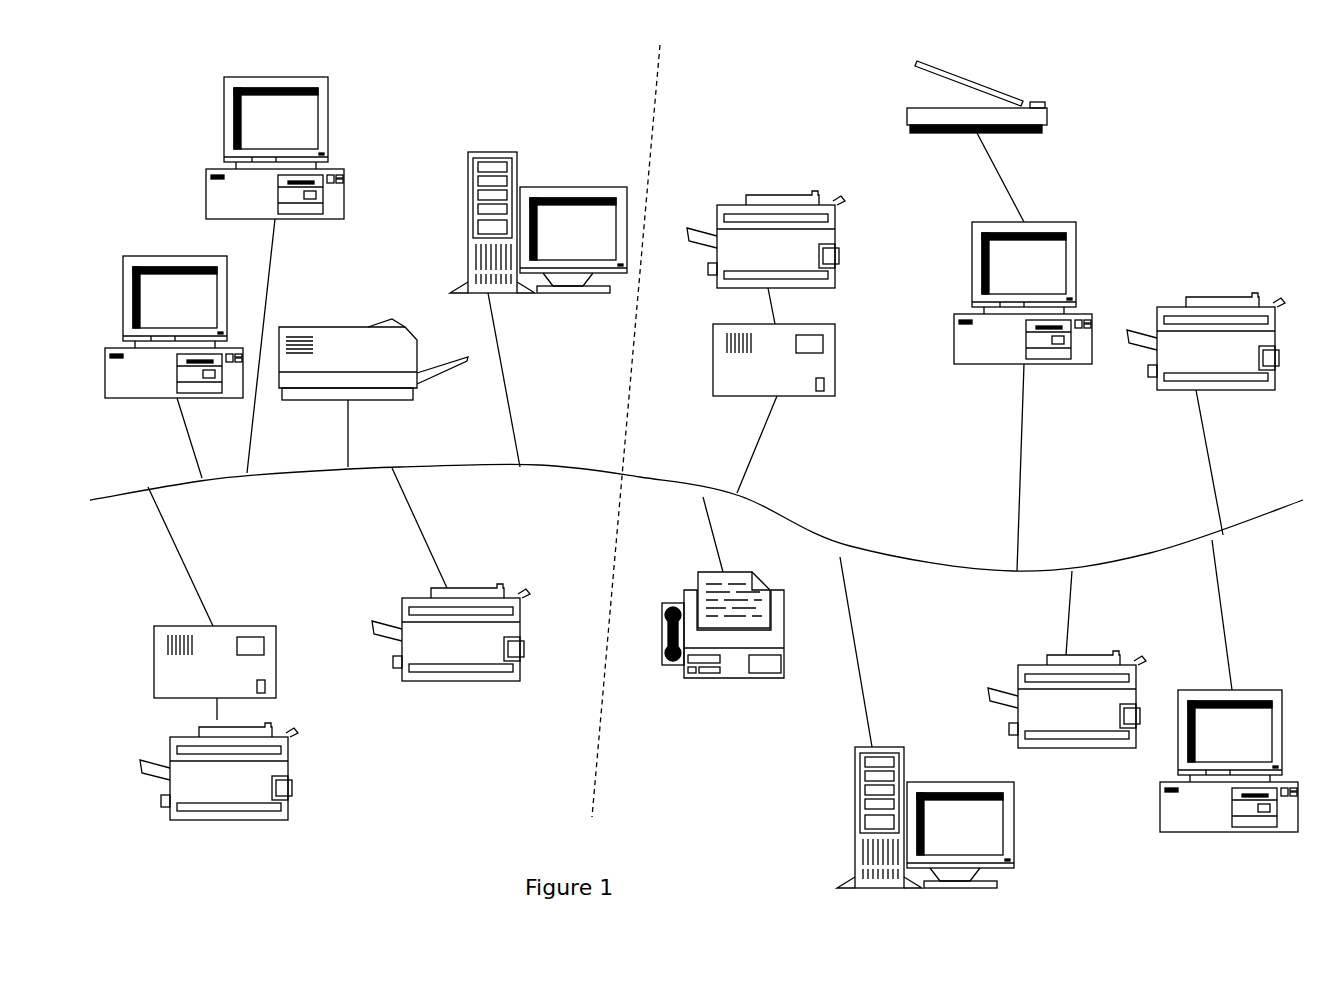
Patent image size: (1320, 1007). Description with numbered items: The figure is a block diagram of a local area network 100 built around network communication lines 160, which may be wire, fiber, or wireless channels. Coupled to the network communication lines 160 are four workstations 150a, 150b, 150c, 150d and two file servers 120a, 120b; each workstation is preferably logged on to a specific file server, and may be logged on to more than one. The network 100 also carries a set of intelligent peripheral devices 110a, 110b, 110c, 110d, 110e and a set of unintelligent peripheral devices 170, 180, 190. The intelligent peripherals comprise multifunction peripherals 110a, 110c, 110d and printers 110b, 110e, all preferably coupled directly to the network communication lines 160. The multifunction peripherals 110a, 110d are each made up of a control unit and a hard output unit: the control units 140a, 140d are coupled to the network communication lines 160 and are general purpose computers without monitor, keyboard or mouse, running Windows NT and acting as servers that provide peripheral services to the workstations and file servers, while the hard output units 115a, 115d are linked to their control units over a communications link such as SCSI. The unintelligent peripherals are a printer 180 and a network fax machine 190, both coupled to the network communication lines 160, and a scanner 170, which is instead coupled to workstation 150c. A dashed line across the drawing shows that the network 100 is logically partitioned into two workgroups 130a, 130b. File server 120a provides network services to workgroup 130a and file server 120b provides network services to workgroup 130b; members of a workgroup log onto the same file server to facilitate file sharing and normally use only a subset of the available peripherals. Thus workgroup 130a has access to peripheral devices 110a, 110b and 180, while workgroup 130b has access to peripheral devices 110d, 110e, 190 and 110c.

The local area network 100 is at (690, 24).
The multifunction peripheral 110a is at (294, 680).
The printer 110b is at (483, 682).
The multifunction peripheral 110c is at (990, 682).
The multifunction peripheral 110d is at (844, 298).
The printer 110e is at (1203, 298).
The hard output unit 115a is at (224, 822).
The hard output unit 115d is at (837, 358).
The file server 120a is at (488, 152).
The file server 120b is at (855, 817).
The workgroup 130a is at (615, 108).
The workgroup 130b is at (757, 108).
The control unit 140a is at (276, 660).
The control unit 140d is at (765, 196).
The workstation 150a is at (173, 256).
The workstation 150b is at (277, 77).
The workstation 150c is at (1058, 222).
The workstation 150d is at (1230, 832).
The network communication lines 160 is at (298, 472).
The scanner 170 is at (1050, 110).
The printer 180 is at (348, 327).
The network fax machine 190 is at (723, 678).